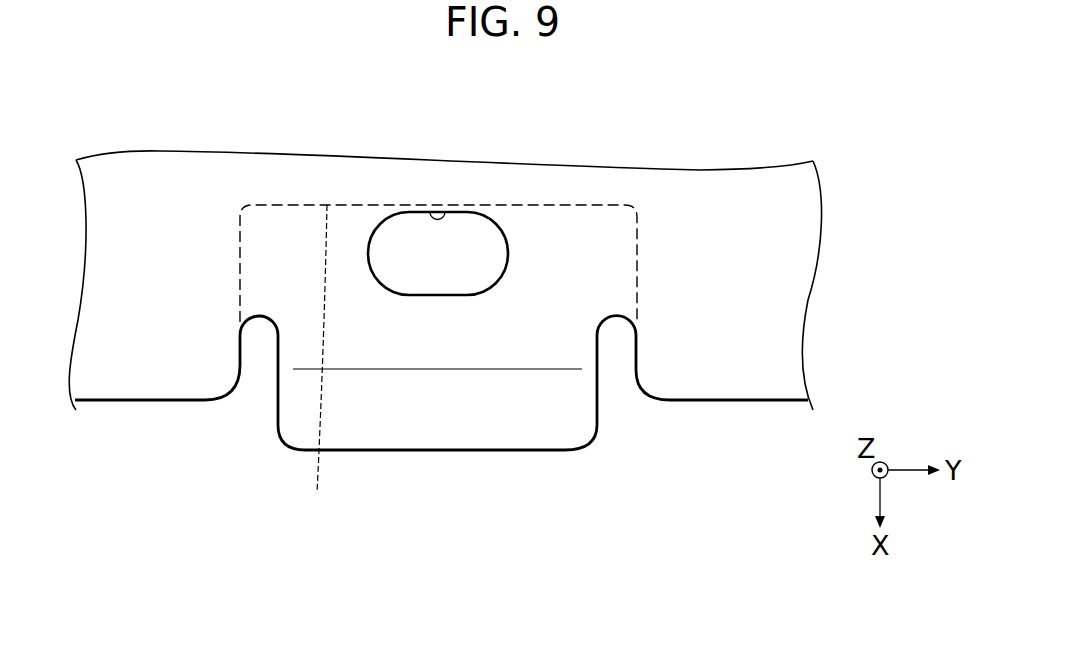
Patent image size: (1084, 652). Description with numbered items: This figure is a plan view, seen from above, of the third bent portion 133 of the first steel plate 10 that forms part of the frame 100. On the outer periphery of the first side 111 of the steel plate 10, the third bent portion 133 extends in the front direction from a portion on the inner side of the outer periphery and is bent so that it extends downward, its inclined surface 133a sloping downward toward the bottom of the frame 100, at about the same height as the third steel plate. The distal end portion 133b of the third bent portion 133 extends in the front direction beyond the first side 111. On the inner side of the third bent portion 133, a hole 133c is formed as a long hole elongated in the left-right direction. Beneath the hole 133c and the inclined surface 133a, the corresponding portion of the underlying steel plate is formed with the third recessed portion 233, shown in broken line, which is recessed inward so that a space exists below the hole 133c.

The frame 100 is at (824, 60).
The first steel plate 10 is at (805, 228).
The first side 111 is at (142, 402).
The third bent portion 133 is at (536, 390).
The inclined surface 133a is at (480, 407).
The distal end portion 133b is at (436, 452).
The hole 133c is at (446, 212).
The third recessed portion 233 is at (349, 379).